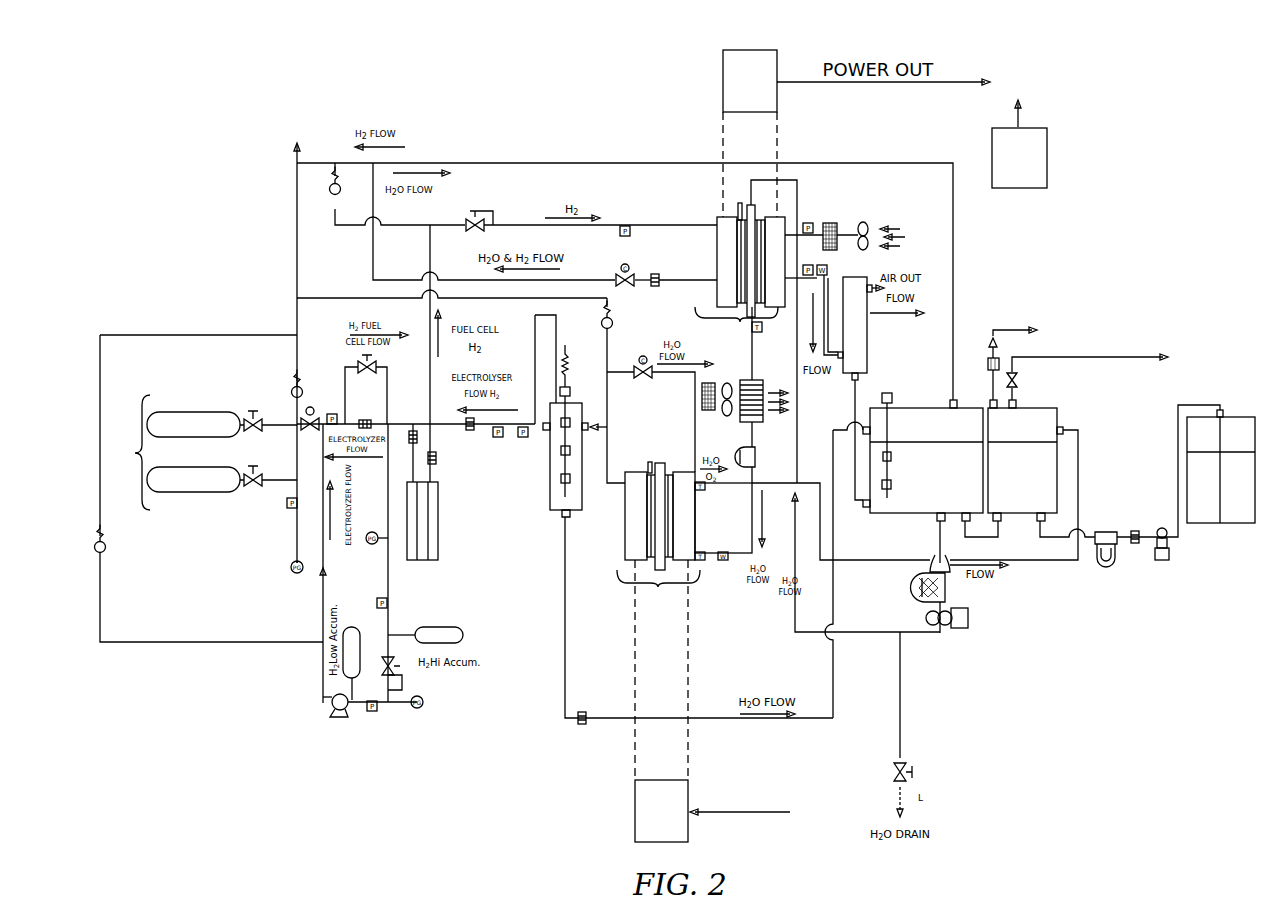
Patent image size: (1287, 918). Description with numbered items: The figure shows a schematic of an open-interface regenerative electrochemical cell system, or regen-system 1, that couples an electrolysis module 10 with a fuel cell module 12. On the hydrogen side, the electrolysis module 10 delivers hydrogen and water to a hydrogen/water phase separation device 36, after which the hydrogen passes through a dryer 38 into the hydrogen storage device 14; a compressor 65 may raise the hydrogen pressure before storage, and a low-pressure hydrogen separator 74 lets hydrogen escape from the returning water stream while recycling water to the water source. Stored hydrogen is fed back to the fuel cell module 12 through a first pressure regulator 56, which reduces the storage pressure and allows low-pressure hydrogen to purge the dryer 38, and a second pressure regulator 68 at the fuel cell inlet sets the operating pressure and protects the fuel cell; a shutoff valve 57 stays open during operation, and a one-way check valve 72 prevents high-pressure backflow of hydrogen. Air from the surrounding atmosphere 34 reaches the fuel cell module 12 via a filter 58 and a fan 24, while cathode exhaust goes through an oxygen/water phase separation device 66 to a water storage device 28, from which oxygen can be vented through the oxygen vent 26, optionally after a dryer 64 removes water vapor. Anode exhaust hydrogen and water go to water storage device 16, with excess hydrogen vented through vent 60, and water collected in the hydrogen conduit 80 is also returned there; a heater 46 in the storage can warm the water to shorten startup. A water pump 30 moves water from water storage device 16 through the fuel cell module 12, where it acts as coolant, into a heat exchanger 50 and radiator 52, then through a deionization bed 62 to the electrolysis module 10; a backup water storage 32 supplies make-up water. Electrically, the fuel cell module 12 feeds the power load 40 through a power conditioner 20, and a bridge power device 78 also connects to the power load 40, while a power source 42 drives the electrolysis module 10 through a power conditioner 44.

The regen-system 1 is at (1190, 110).
The electrolysis module 10 is at (658, 527).
The fuel cell module 12 is at (727, 331).
The hydrogen storage device 14 is at (172, 452).
The water storage device 16 is at (923, 457).
The power conditioner 20 is at (750, 133).
The fan 24 is at (869, 229).
The oxygen vent 26 is at (1150, 357).
The water storage device 28 is at (1025, 460).
The water pump 30 is at (968, 620).
The backup water storage 32 is at (1229, 497).
The surrounding atmosphere 34 is at (1179, 368).
The phase separation device 36 is at (550, 500).
The dryer 38 is at (438, 500).
The power load 40 is at (1017, 99).
The power source 42 is at (757, 809).
The power conditioner 44 is at (661, 811).
The heater 46 is at (924, 521).
The heat exchanger 50 is at (790, 330).
The radiator 52 is at (755, 383).
The first pressure regulator 56 is at (362, 362).
The shutoff valve 57 is at (312, 407).
The filter 58 is at (831, 223).
The vent 60 is at (297, 165).
The deionization bed 62 is at (757, 458).
The dryer 64 is at (985, 362).
The compressor 65 is at (338, 718).
The oxygen/water phase separation device 66 is at (867, 330).
The second pressure regulator 68 is at (478, 215).
The one-way check valve 72 is at (252, 411).
The low-pressure hydrogen separator 74 is at (354, 625).
The bridge power device 78 is at (1019, 158).
The conduit 80 is at (565, 163).